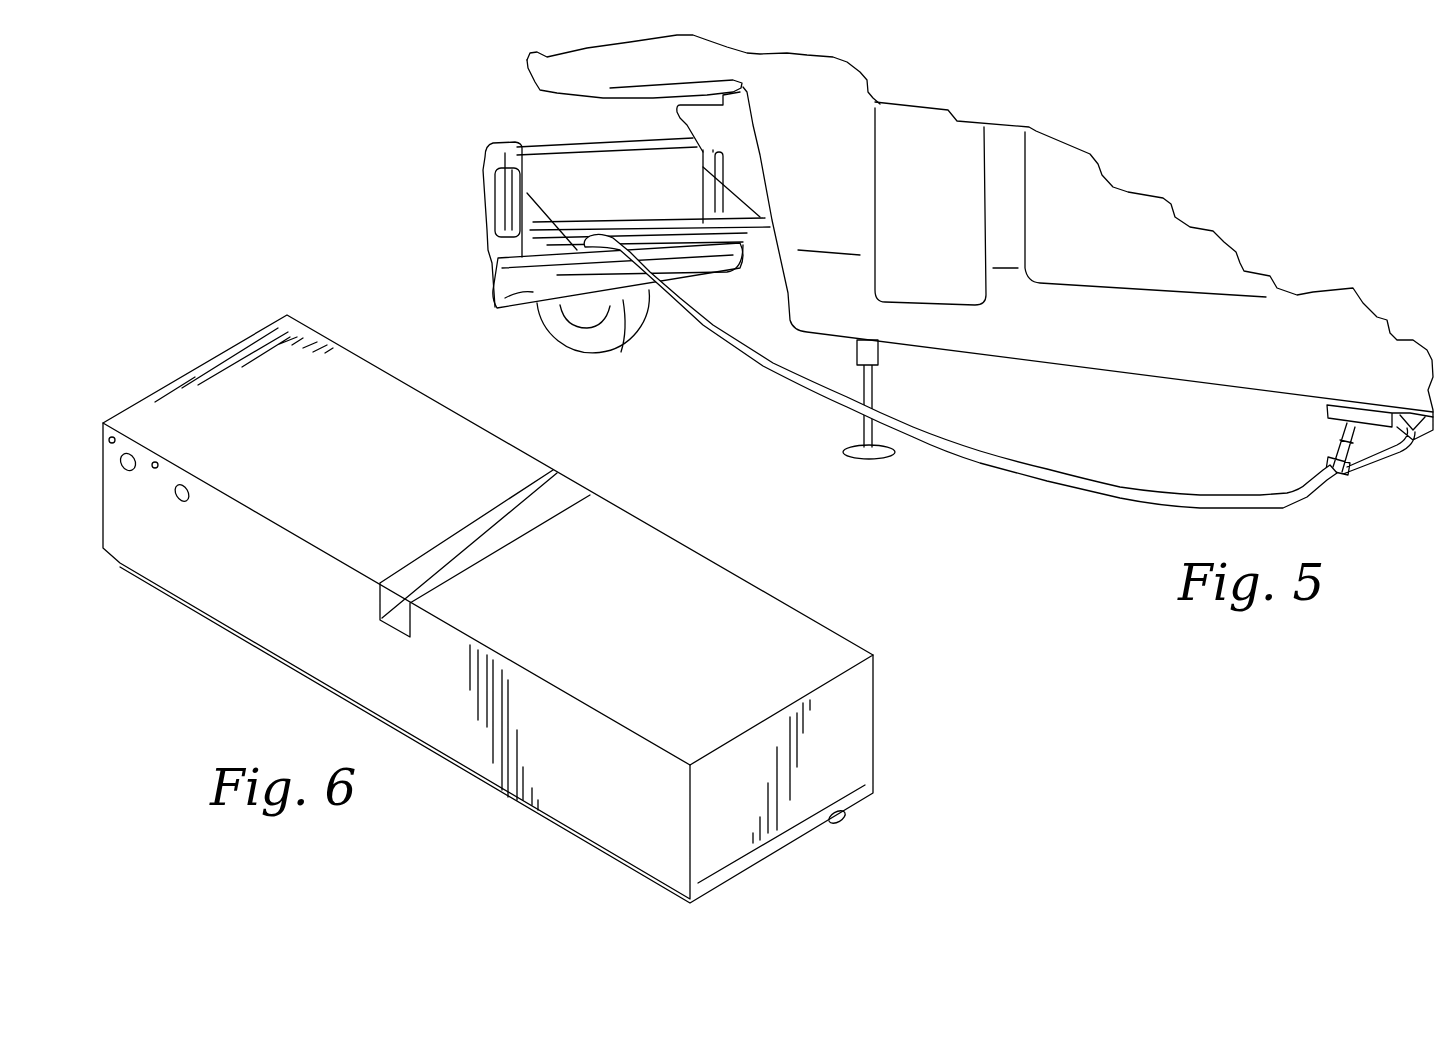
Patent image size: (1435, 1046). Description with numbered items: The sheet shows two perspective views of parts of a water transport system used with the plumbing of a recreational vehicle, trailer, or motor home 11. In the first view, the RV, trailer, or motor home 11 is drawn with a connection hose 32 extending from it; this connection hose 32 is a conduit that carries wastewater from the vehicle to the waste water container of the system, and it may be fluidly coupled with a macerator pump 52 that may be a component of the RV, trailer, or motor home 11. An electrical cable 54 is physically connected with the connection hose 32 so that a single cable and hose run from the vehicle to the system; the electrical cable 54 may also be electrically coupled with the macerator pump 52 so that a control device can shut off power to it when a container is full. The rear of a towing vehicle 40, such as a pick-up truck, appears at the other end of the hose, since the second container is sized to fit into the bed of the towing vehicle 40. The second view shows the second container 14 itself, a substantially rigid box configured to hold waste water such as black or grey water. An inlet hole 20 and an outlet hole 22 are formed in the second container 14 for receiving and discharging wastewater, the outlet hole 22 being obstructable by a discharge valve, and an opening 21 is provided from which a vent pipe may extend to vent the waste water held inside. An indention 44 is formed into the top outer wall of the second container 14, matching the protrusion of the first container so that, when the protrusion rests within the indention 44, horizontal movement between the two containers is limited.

In FIG. 5, the recreational vehicle, trailer, or motor home 11 is at (1083, 360).
In FIG. 5, the towing vehicle 40 is at (497, 297).
In FIG. 5, the macerator pump 52 is at (1327, 407).
In FIG. 5, the connection hose 32 is at (960, 398).
In FIG. 5, the electrical cable 54 is at (1065, 487).
In FIG. 6, the second container 14 is at (177, 402).
In FIG. 6, the inlet hole 20 is at (123, 468).
In FIG. 6, the opening 21 is at (183, 483).
In FIG. 6, the outlet hole 22 is at (833, 827).
In FIG. 6, the indention 44 is at (548, 510).